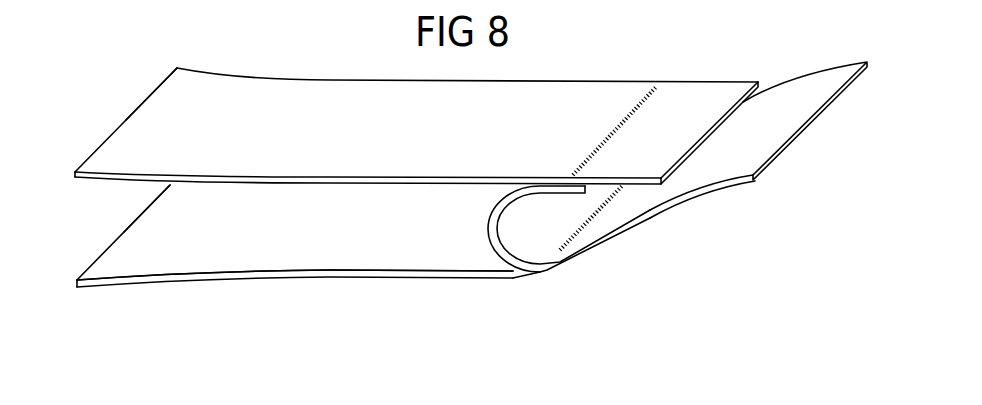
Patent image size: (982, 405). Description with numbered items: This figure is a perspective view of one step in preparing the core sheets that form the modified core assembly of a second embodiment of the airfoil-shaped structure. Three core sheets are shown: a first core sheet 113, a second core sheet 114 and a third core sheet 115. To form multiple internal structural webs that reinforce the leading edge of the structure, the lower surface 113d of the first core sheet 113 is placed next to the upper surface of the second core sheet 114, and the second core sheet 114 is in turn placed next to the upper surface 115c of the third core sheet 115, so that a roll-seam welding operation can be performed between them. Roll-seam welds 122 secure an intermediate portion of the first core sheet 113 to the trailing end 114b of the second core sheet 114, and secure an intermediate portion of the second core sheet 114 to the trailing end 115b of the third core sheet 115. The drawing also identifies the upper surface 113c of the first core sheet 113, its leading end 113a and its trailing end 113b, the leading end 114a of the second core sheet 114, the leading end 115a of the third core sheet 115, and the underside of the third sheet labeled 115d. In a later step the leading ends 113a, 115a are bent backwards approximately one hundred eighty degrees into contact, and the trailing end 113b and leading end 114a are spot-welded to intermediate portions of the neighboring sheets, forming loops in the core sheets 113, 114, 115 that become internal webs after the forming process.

The first core sheet 113 is at (282, 92).
The leading end of first core sheet 113a is at (118, 165).
The trailing end of first core sheet 113b is at (650, 183).
The upper surface of first core sheet 113c is at (542, 98).
The lower surface of first core sheet 113d is at (148, 185).
The second core sheet 114 is at (796, 96).
The leading end of second core sheet 114a is at (730, 183).
The trailing end of second core sheet 114b is at (565, 195).
The third core sheet 115 is at (192, 258).
The leading end of third core sheet 115a is at (118, 262).
The trailing end of third core sheet 115b is at (543, 272).
The upper surface of third core sheet 115c is at (293, 260).
The bottom surface of lower panel 115d is at (335, 277).
The roll-seam welds 122 is at (653, 90).